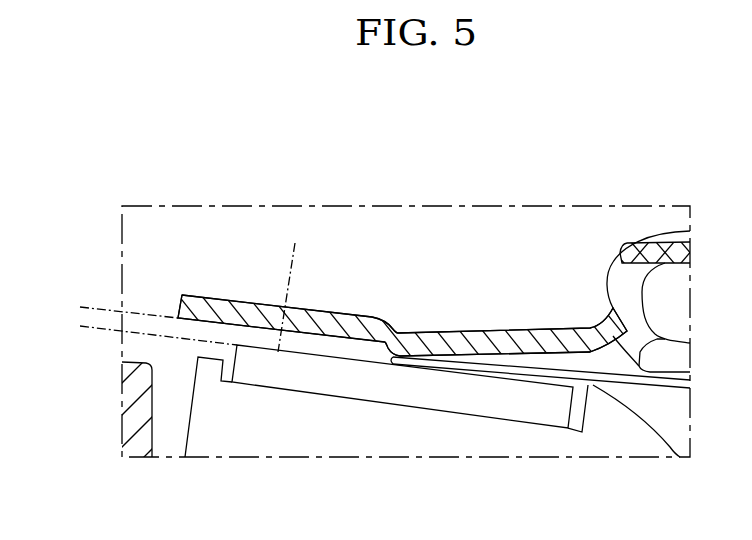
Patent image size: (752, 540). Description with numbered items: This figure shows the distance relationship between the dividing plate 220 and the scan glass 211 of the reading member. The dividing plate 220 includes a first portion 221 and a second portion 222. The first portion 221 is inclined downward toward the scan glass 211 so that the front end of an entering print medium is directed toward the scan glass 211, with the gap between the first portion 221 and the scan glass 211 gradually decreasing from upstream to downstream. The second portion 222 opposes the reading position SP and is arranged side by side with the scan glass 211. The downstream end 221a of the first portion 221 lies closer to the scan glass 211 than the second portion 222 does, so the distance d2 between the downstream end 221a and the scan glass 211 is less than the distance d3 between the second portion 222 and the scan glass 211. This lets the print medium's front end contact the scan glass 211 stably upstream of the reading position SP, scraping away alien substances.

The scan glass 211 is at (356, 385).
The dividing plate 220 is at (332, 143).
The first portion 221 is at (463, 343).
The downstream end 221a is at (391, 338).
The second portion 222 is at (305, 312).
The reading position SP is at (291, 283).
The distance between downstream end and scan glass d2 is at (500, 420).
The distance between second portion and scan glass d3 is at (90, 280).